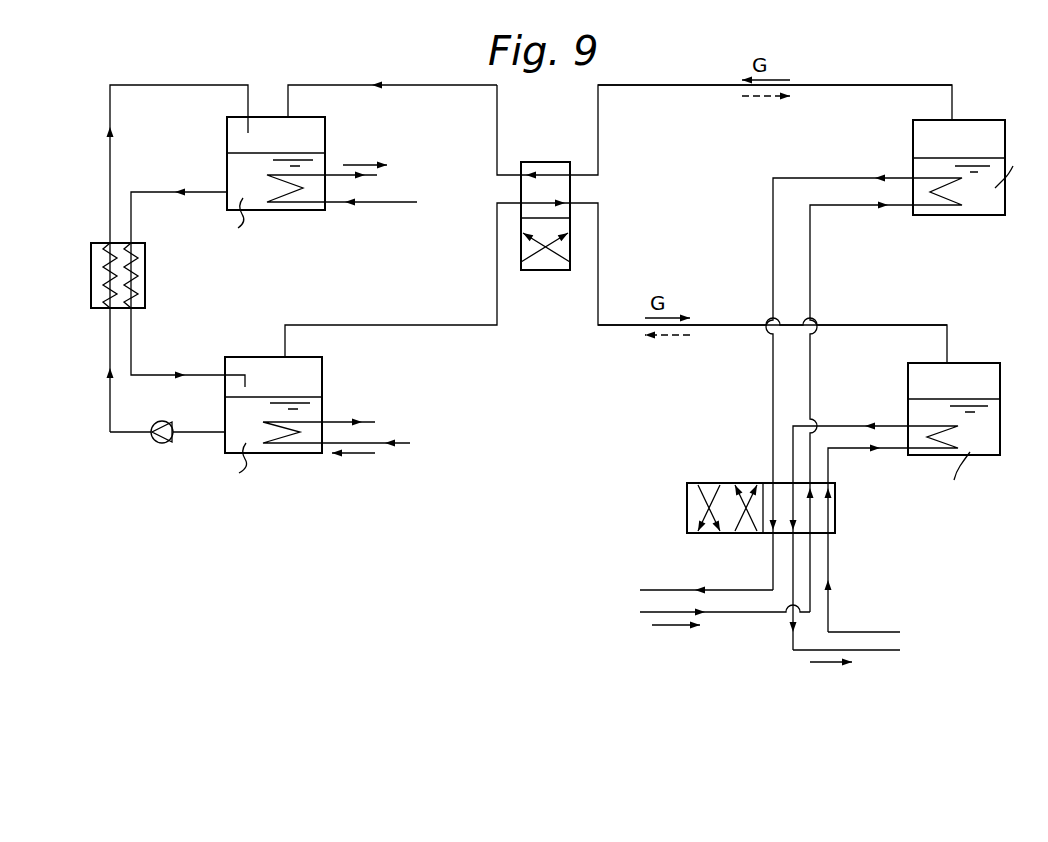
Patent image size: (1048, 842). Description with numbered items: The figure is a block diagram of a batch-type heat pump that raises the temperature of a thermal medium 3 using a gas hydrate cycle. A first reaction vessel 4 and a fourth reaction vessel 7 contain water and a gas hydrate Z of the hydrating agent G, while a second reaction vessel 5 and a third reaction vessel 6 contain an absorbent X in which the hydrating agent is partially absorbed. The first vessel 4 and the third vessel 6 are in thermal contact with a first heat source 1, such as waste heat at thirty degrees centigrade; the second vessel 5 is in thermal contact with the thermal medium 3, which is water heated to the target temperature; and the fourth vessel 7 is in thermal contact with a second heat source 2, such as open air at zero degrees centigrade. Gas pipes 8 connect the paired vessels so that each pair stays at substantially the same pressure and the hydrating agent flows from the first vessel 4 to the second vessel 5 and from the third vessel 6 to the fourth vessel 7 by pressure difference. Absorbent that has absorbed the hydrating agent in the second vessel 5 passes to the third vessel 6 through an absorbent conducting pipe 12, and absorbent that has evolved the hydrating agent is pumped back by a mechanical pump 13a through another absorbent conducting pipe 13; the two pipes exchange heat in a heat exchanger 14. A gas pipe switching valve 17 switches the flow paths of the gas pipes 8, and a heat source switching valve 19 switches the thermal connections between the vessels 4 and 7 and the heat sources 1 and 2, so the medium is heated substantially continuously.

The first heat source 1 is at (372, 420).
The second heat source 2 is at (888, 654).
The thermal medium 3 is at (378, 202).
The first reaction vessel 4 is at (1005, 130).
The second reaction vessel 5 is at (310, 117).
The third reaction vessel 6 is at (302, 453).
The fourth reaction vessel 7 is at (1000, 455).
The gas pipe 8 is at (845, 85).
The absorbent conducting pipe 12 is at (158, 375).
The absorbent conducting pipe 13 is at (108, 434).
The mechanical pump 13a is at (163, 443).
The heat exchanger 14 is at (91, 272).
The gas pipe switching valve 17 is at (543, 270).
The heat source switching valve 19 is at (835, 517).